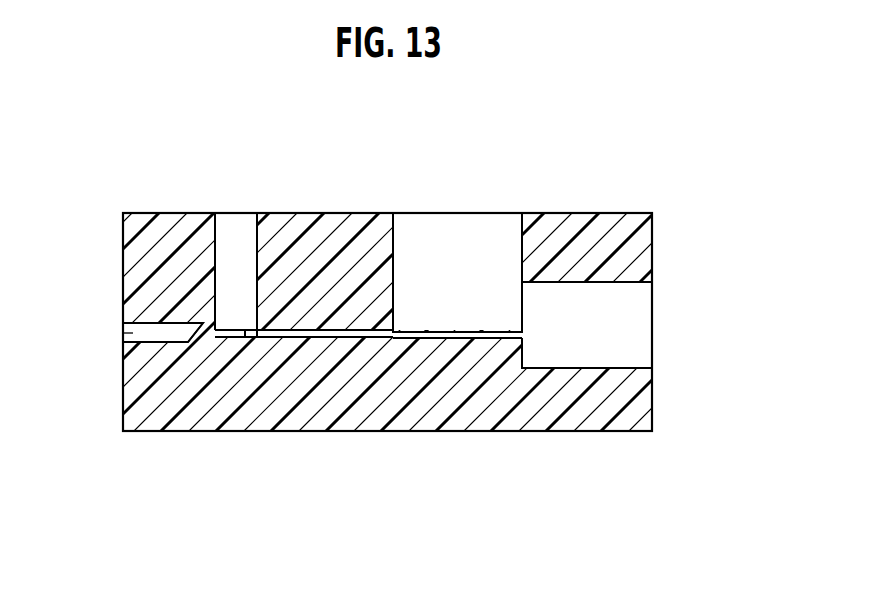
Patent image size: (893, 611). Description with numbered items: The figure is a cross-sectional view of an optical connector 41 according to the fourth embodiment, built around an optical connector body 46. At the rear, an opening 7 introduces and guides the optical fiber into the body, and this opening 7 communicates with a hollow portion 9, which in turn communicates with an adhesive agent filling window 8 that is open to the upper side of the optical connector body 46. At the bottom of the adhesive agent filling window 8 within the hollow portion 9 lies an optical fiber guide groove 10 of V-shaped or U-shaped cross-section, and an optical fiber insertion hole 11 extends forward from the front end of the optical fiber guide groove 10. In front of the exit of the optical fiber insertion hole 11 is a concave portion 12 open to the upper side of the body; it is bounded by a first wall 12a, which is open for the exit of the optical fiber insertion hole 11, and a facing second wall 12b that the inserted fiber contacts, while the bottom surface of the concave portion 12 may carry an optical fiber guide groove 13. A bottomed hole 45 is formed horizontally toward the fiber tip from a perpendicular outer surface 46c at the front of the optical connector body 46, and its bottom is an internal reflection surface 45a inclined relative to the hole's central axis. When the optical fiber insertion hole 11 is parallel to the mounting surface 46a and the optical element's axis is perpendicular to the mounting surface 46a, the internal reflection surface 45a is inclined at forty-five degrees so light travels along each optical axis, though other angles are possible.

The optical connector 41 is at (589, 167).
The optical connector body 46 is at (362, 222).
The mounting surface 46a is at (363, 432).
The perpendicular outer surface 46c is at (123, 287).
The bottomed hole 45 is at (123, 342).
The internal reflection surface 45a is at (215, 333).
The concave portion 12 is at (242, 227).
The first wall 12a is at (257, 258).
The second wall 12b is at (233, 328).
The optical fiber insertion hole 11 is at (312, 330).
The optical fiber guide groove 13 is at (247, 333).
The optical fiber guide groove 10 is at (453, 332).
The hollow portion 9 is at (435, 245).
The adhesive agent filling window 8 is at (480, 230).
The opening 7 is at (637, 339).